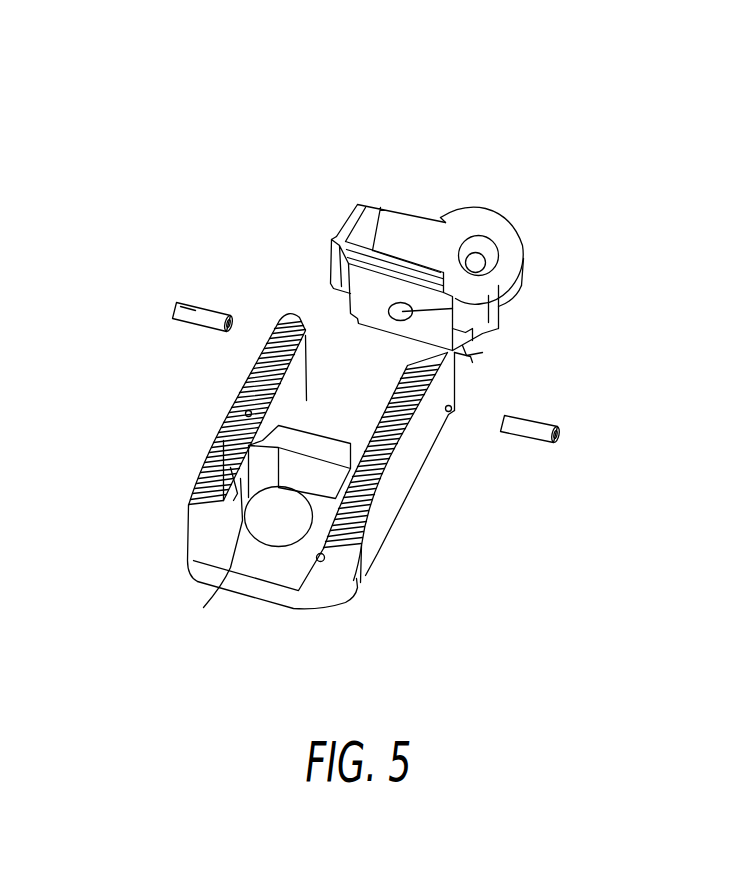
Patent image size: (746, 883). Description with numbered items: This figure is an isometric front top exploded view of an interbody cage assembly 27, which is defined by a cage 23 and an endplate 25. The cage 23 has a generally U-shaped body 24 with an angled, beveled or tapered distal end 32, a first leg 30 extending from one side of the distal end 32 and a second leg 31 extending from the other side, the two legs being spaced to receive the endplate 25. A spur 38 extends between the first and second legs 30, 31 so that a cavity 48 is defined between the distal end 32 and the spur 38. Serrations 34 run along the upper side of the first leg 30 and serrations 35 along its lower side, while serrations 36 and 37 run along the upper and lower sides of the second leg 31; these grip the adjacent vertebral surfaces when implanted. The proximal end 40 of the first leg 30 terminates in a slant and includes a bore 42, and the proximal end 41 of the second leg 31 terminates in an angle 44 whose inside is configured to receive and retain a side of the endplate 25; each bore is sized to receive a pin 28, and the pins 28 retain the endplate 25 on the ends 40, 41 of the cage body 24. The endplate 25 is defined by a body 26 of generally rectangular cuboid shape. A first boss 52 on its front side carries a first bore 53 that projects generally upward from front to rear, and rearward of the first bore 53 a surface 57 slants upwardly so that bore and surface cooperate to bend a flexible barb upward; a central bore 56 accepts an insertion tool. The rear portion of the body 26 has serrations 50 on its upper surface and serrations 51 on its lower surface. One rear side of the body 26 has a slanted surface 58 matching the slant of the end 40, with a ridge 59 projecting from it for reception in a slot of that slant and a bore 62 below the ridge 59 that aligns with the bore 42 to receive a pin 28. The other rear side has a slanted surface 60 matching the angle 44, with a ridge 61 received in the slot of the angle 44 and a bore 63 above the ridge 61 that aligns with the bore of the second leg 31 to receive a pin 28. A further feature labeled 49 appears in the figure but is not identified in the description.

The cage 23 is at (143, 417).
The body 24 is at (181, 530).
The endplate 25 is at (558, 220).
The body 26 is at (368, 200).
The interbody cage assembly 27 is at (98, 62).
The pin 28 is at (170, 310).
The first leg 30 is at (388, 488).
The second leg 31 is at (203, 460).
The distal end 32 is at (263, 583).
The serrations 34 is at (393, 432).
The serrations 35 is at (377, 567).
The serrations 36 is at (217, 420).
The serrations 37 is at (213, 580).
The spur 38 is at (303, 475).
The proximal end 40 is at (454, 378).
The proximal end 41 is at (297, 310).
The bore 42 is at (453, 410).
The angle 44 is at (330, 383).
The cavity 48 is at (290, 535).
The groove 49 is at (298, 397).
The serrations 50 is at (373, 250).
The serrations 51 is at (340, 380).
The first boss 52 is at (503, 232).
The first bore 53 is at (458, 275).
The central bore 56 is at (520, 264).
The surface 57 is at (440, 240).
The slanted surface 58 is at (505, 312).
The ridge 59 is at (480, 333).
The slanted surface 60 is at (350, 267).
The ridge 61 is at (340, 277).
The bore 62 is at (472, 362).
The bore 63 is at (345, 283).